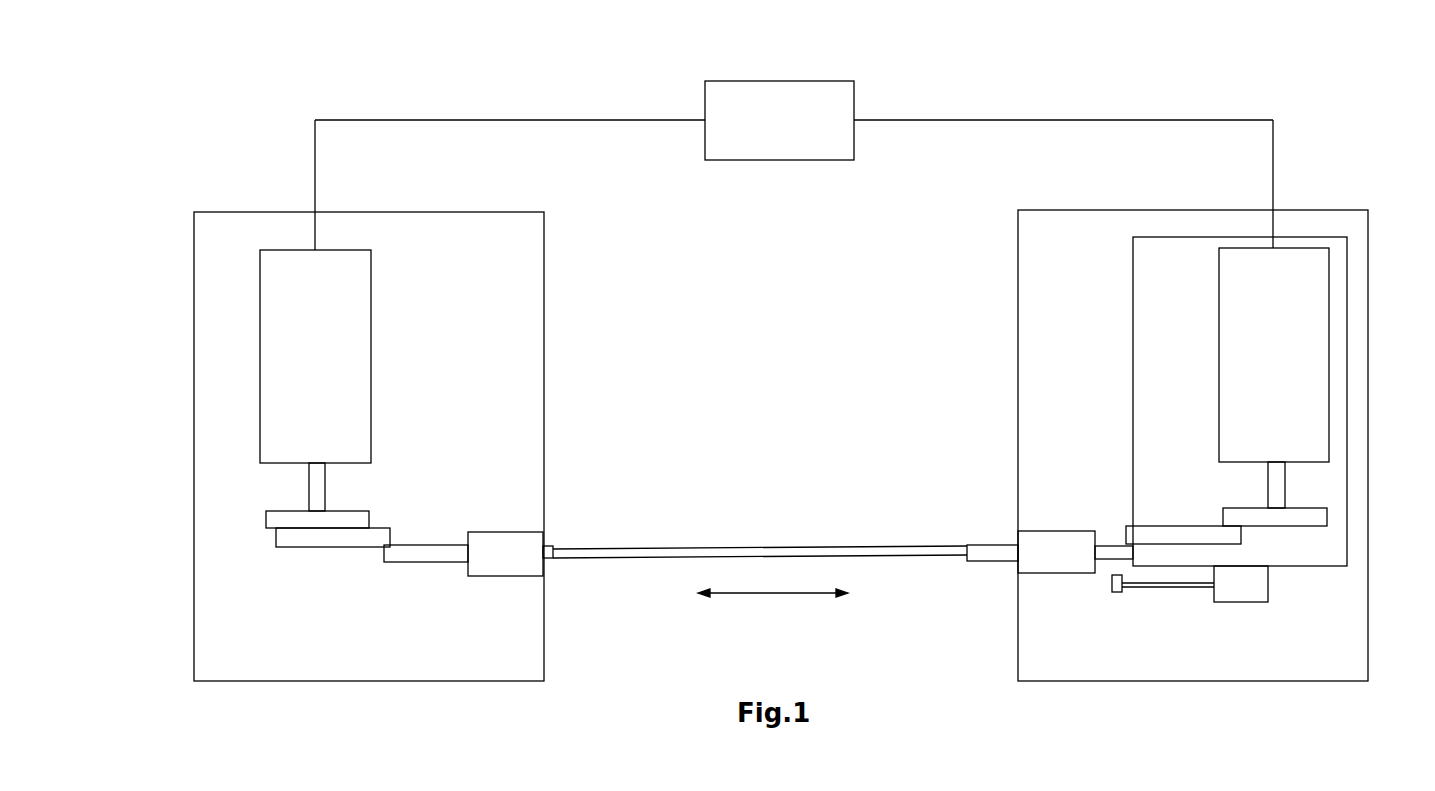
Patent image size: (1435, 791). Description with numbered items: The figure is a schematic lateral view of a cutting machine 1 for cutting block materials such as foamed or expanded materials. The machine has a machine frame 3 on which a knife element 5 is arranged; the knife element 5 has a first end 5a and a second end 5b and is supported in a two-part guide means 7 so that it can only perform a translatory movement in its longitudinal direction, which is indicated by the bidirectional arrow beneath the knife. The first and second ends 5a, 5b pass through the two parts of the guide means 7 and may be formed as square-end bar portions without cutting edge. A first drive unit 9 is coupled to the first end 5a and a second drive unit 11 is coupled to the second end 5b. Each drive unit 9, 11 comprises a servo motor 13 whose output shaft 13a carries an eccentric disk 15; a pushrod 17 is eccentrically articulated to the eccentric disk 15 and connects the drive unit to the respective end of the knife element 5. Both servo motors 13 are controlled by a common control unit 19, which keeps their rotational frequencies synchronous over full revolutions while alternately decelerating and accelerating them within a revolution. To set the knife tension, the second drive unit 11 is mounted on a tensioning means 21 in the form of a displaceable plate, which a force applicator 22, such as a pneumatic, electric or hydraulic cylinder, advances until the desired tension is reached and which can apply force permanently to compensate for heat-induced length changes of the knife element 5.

The cutting machine 1 is at (243, 100).
The machine frame 3 is at (195, 329).
The knife element 5 is at (654, 548).
The first end 5a is at (438, 532).
The second end 5b is at (1112, 533).
The guide means 7 is at (483, 587).
The first drive unit 9 is at (390, 342).
The second drive unit 11 is at (1195, 363).
The servo motor 13 is at (292, 283).
The output shaft 13a is at (317, 488).
The eccentric disk 15 is at (277, 520).
The pushrod 17 is at (305, 542).
The control unit 19 is at (728, 104).
The tensioning means 21 is at (1133, 413).
The force applicator 22 is at (1232, 585).